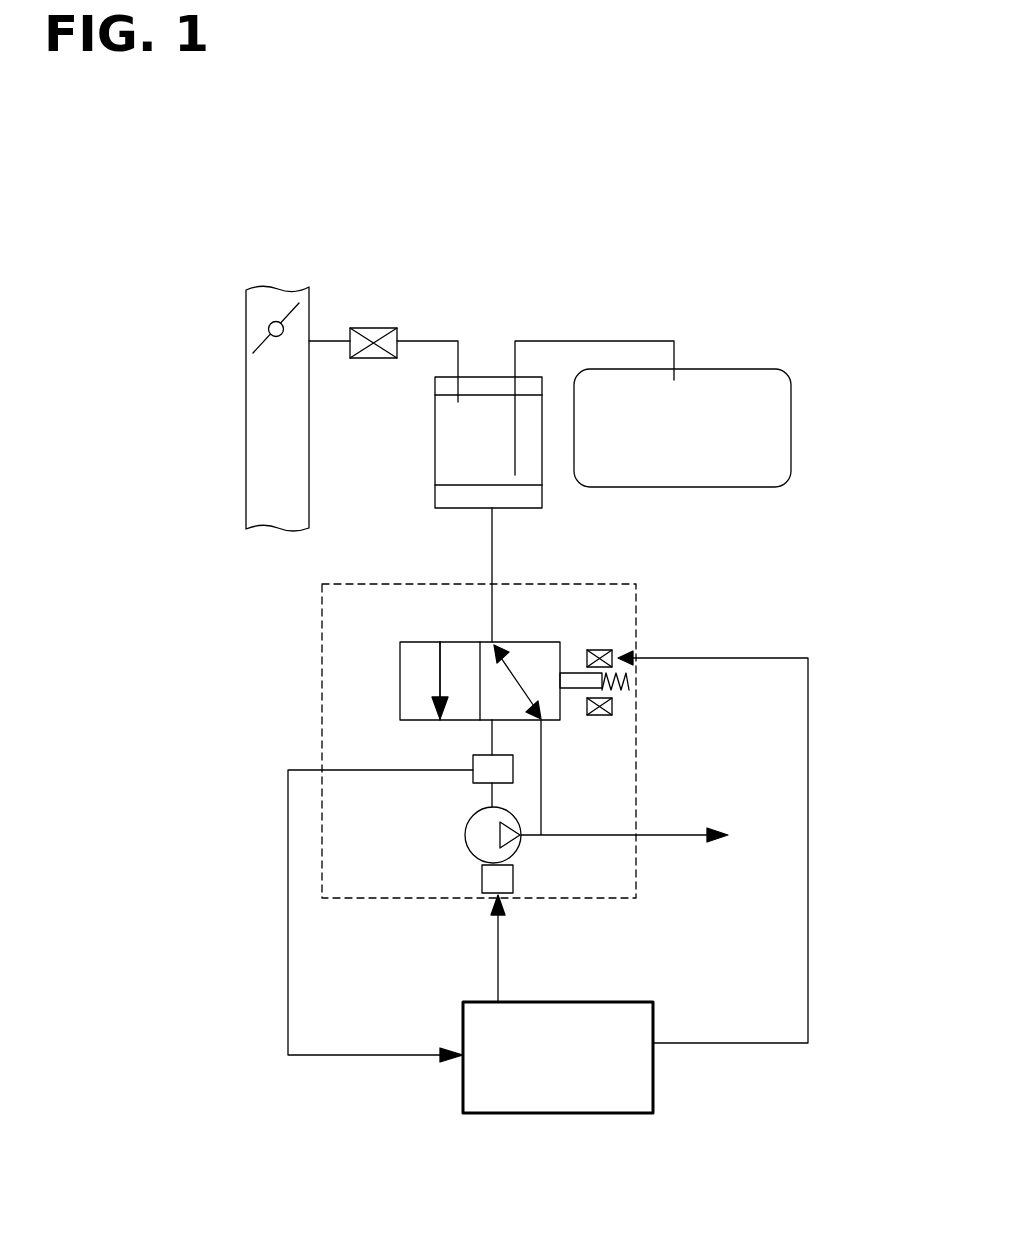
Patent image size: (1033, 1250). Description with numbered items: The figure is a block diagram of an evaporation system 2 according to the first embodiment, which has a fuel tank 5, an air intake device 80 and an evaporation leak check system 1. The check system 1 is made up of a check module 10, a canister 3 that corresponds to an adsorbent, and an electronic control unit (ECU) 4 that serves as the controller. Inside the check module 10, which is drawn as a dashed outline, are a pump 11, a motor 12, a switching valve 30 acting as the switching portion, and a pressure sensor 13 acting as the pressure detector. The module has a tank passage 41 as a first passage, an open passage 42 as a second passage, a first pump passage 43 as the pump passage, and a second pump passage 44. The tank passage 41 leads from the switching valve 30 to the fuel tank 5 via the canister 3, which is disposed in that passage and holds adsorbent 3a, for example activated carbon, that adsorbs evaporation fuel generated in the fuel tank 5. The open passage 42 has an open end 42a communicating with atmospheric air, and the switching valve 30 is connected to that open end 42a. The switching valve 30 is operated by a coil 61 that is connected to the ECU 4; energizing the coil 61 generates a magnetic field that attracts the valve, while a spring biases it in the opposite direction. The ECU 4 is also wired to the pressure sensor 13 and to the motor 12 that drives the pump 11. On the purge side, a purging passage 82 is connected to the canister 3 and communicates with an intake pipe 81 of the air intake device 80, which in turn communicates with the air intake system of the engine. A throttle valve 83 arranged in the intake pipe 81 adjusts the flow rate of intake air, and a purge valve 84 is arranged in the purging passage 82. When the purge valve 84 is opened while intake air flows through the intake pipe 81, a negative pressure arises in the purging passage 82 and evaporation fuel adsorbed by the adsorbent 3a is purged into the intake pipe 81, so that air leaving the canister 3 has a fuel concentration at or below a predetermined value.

The evaporation leak check system 1 is at (207, 682).
The evaporation system 2 is at (656, 283).
The canister 3 is at (522, 387).
The adsorbent 3a is at (487, 405).
The electronic control unit (ECU) 4 is at (463, 1090).
The fuel tank 5 is at (791, 415).
The check module 10 is at (320, 613).
The pump 11 is at (465, 837).
The motor 12 is at (482, 883).
The pressure sensor 13 is at (473, 770).
The switching valve 30 is at (580, 669).
The tank passage 41 is at (496, 537).
The open passage 42 is at (542, 762).
The open end 42a is at (729, 833).
The first pump passage 43 is at (488, 737).
The second pump passage 44 is at (523, 838).
The coil 61 is at (597, 650).
The air intake device 80 is at (299, 360).
The intake pipe 81 is at (244, 404).
The purging passage 82 is at (425, 338).
The throttle valve 83 is at (292, 300).
The purge valve 84 is at (373, 328).